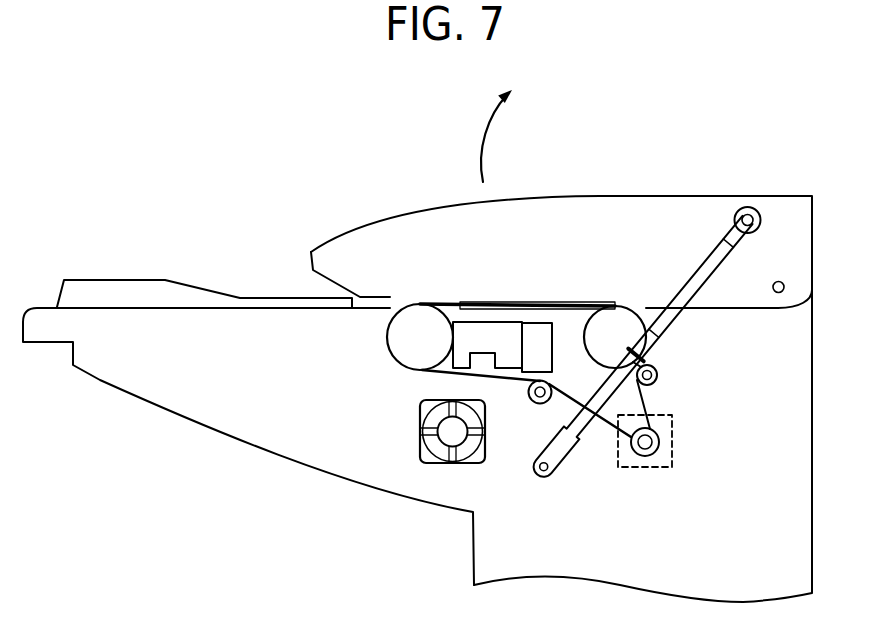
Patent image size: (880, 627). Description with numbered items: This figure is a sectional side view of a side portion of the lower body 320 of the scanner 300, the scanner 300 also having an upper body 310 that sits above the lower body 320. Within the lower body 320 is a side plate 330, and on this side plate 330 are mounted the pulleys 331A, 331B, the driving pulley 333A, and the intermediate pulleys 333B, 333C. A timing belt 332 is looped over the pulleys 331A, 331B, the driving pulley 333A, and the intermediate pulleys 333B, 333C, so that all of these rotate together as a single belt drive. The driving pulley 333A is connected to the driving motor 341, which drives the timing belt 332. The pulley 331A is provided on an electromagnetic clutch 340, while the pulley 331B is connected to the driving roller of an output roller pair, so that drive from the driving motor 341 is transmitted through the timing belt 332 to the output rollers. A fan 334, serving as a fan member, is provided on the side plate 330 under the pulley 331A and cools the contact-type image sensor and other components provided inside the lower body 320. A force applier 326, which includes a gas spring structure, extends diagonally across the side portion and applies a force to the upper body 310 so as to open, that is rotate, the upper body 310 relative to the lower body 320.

The scanner 300 is at (673, 95).
The upper body 310 is at (847, 240).
The lower body 320 is at (848, 397).
The force applier 326 is at (710, 262).
The side plate 330 is at (315, 463).
The pulley 331A is at (388, 337).
The pulley 331B is at (638, 316).
The timing belt 332 is at (487, 303).
The driving pulley 333A is at (661, 442).
The intermediate pulley 333B is at (537, 404).
The intermediate pulley 333C is at (659, 376).
The fan 334 is at (419, 408).
The electromagnetic clutch 340 is at (513, 352).
The driving motor 341 is at (653, 468).